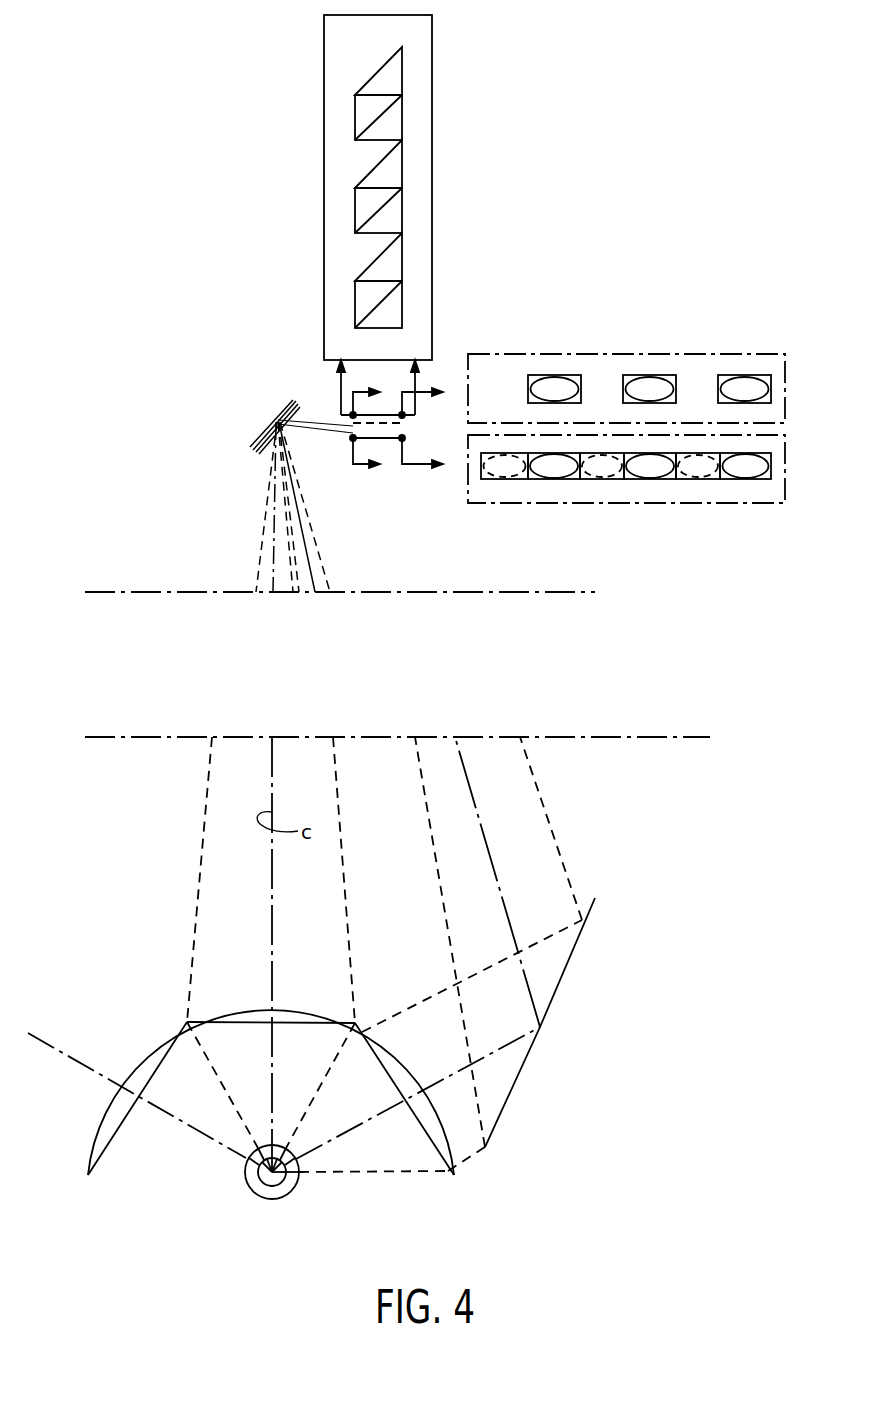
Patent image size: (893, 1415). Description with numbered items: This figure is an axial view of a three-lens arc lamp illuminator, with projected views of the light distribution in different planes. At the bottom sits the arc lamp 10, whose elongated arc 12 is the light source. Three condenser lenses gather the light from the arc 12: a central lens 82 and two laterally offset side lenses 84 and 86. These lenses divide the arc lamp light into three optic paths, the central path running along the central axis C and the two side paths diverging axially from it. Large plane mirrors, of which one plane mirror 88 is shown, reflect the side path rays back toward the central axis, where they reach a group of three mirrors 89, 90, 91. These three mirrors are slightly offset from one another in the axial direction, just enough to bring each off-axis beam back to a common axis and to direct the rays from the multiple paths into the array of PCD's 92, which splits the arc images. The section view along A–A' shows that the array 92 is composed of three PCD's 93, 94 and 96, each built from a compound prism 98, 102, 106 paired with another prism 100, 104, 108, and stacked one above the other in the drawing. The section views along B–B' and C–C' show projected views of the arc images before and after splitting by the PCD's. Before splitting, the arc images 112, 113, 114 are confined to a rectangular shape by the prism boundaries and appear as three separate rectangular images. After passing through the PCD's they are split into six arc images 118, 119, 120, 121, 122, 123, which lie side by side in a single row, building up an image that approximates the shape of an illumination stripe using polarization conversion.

The arc lamp 10 is at (262, 1192).
The elongated arc 12 is at (278, 1187).
The central lens 82 is at (215, 993).
The side lens 84 is at (467, 1156).
The side lens 86 is at (80, 1130).
The plane mirror 88 is at (520, 1077).
The mirror 89 is at (246, 481).
The mirror 90 is at (246, 481).
The mirror 91 is at (277, 418).
The array of PCD's 92 is at (373, 430).
The PCD 93 is at (447, 289).
The PCD 94 is at (447, 213).
The PCD 96 is at (447, 99).
The compound prism 98 is at (355, 302).
The prism 100 is at (372, 260).
The compound prism 102 is at (355, 212).
The prism 104 is at (373, 163).
The compound prism 106 is at (355, 115).
The prism 108 is at (375, 68).
The arc image 112 is at (548, 375).
The arc image 113 is at (643, 375).
The arc image 114 is at (748, 375).
The arc image 118 is at (507, 480).
The arc image 119 is at (555, 480).
The arc image 120 is at (602, 480).
The arc image 121 is at (652, 480).
The arc image 122 is at (700, 480).
The arc image 123 is at (750, 480).